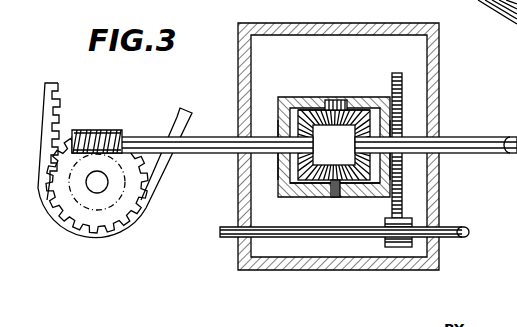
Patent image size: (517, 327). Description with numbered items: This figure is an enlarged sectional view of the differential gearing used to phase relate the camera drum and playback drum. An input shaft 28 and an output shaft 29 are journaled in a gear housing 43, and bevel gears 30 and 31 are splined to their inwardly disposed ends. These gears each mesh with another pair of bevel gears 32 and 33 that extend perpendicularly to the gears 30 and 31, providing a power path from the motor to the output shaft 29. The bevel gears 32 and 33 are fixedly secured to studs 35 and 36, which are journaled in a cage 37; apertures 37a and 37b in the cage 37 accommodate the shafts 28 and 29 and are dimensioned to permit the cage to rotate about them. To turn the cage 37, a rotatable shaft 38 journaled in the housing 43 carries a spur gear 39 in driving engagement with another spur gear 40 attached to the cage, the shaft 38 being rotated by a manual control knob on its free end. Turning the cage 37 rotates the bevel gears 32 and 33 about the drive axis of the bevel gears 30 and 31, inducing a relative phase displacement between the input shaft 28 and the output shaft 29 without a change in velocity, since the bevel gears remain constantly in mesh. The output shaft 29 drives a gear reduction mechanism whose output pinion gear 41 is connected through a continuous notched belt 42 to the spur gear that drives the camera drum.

The input shaft 28 is at (501, 124).
The output shaft 29 is at (207, 142).
The bevel gear 30 is at (357, 159).
The bevel gear 31 is at (316, 145).
The bevel gear 32 is at (353, 111).
The bevel gear 33 is at (318, 197).
The stud 35 is at (344, 102).
The stud 36 is at (337, 197).
The cage 37 is at (303, 97).
The aperture 37a is at (276, 134).
The aperture 37b is at (398, 136).
The rotatable shaft 38 is at (454, 232).
The spur gear 39 is at (387, 243).
The spur gear 40 is at (404, 181).
The output pinion gear 41 is at (73, 208).
The continuous notched belt 42 is at (57, 98).
The gear housing 43 is at (404, 8).